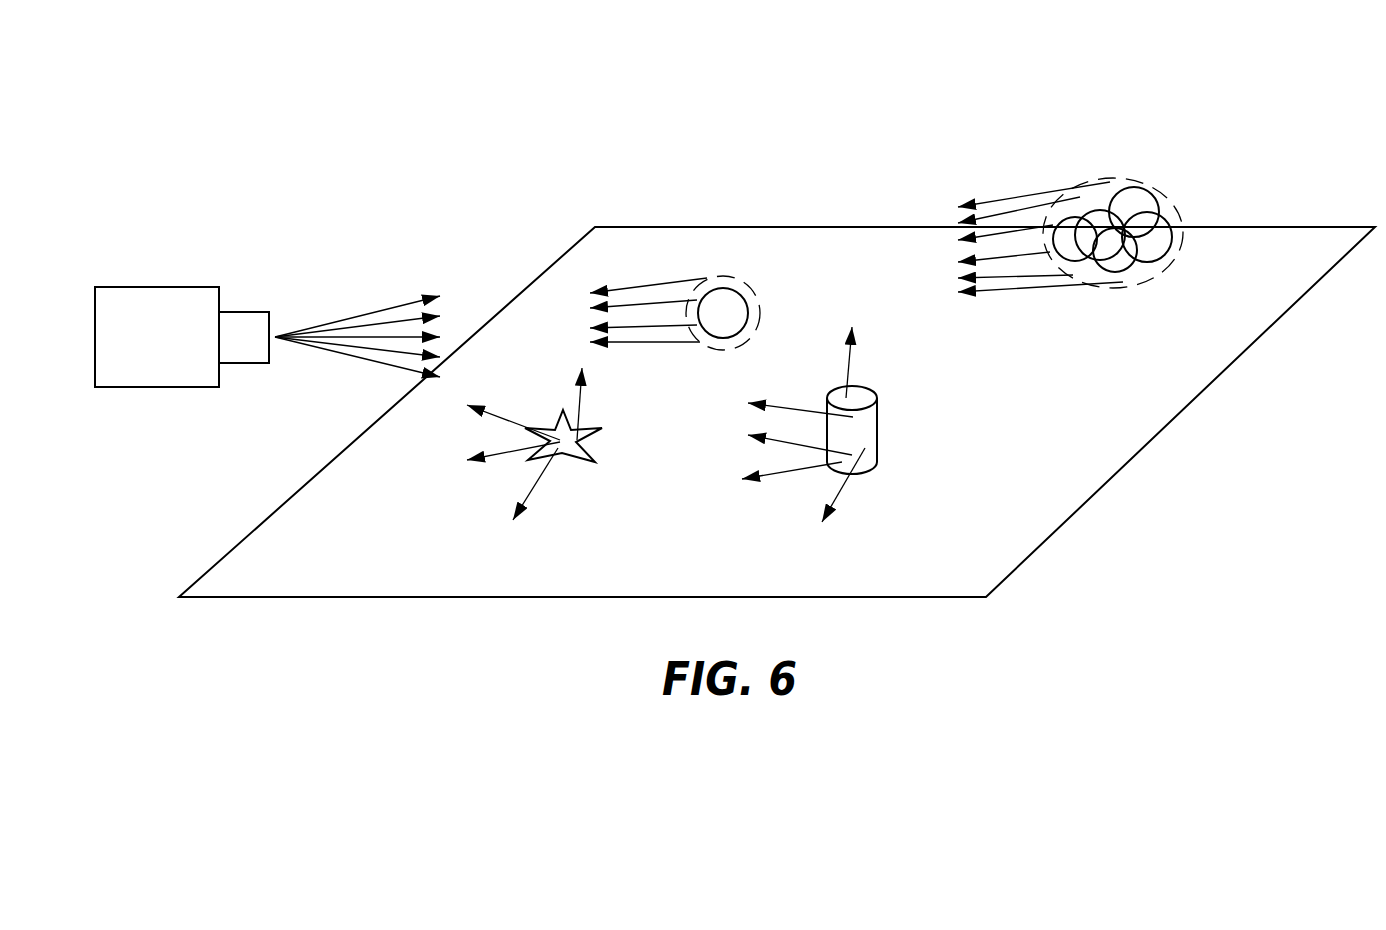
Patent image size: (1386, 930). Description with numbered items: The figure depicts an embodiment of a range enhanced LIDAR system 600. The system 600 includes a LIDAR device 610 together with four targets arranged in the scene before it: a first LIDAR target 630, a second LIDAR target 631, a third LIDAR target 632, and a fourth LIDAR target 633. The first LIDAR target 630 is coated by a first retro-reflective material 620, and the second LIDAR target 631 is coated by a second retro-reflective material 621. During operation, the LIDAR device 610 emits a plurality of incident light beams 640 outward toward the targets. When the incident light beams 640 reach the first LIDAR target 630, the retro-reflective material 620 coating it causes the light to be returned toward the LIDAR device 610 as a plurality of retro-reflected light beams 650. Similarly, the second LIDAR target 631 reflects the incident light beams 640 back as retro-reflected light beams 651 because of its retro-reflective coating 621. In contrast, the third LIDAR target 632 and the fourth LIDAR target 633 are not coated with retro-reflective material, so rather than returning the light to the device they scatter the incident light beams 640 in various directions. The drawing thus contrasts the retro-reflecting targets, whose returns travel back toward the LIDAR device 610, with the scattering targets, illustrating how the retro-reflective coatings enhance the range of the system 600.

The range enhanced LIDAR system 600 is at (467, 93).
The LIDAR device 610 is at (135, 287).
The first retro-reflective material 620 is at (760, 300).
The second retro-reflective material 621 is at (1170, 200).
The first LIDAR target 630 is at (728, 288).
The second LIDAR target 631 is at (1147, 190).
The third LIDAR target 632 is at (563, 453).
The fourth LIDAR target 633 is at (878, 428).
The incident light beams 640 is at (340, 320).
The retro-reflected light beams 650 is at (657, 287).
The retro-reflected light beams 651 is at (1008, 198).